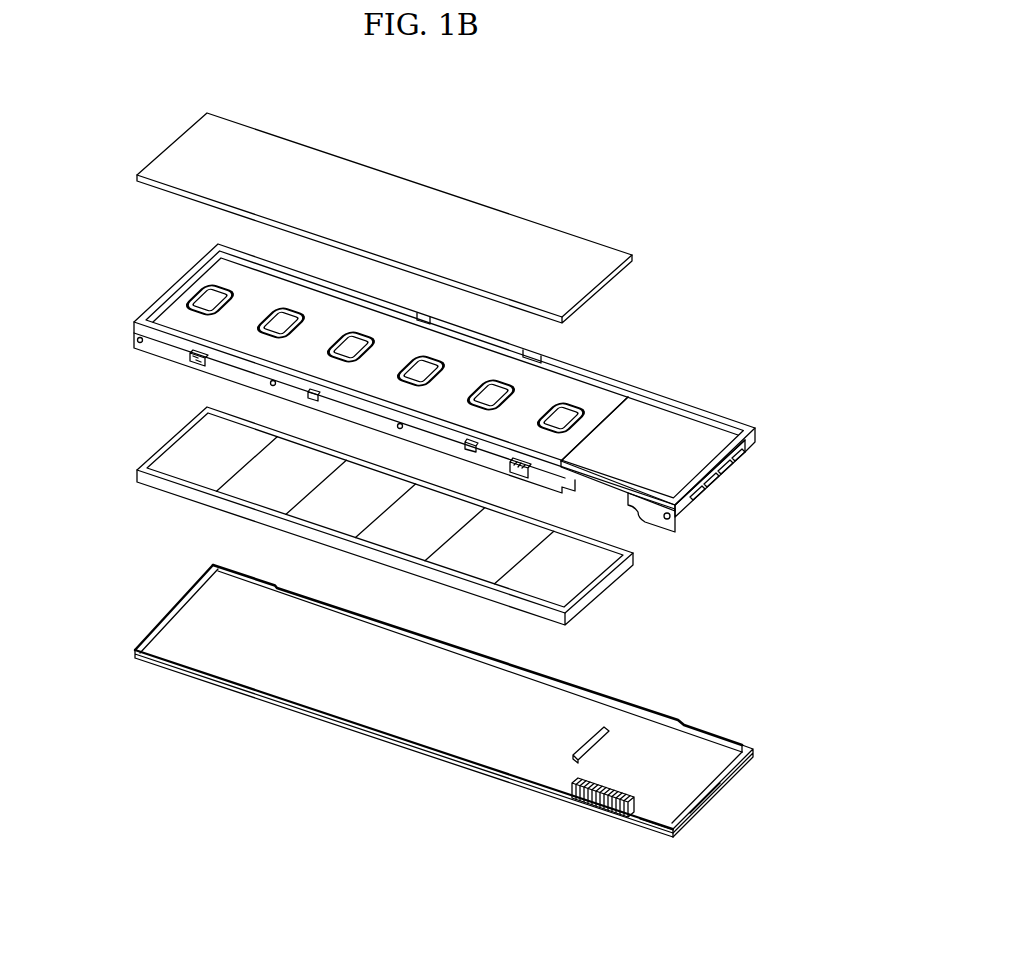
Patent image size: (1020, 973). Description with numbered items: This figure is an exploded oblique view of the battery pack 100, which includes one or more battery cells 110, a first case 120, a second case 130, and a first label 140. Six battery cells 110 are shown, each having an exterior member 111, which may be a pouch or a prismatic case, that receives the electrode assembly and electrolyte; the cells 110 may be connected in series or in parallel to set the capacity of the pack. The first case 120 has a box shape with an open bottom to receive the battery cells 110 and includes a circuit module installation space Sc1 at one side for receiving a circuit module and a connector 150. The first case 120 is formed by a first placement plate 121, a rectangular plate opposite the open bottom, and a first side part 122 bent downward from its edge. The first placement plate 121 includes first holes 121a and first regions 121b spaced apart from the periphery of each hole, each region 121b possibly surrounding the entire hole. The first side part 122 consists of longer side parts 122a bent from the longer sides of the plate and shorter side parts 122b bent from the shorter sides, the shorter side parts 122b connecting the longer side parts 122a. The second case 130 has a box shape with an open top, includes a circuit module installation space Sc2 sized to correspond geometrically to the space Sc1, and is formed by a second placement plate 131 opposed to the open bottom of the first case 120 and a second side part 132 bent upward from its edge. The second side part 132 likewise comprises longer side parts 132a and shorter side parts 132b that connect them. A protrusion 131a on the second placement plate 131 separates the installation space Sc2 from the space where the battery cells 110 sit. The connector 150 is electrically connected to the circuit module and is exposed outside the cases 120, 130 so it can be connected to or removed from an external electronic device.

The battery pack 100 is at (745, 163).
The battery cell 110 is at (246, 490).
The exterior member 111 is at (178, 443).
The first case 120 is at (118, 322).
The first placement plate 121 is at (156, 310).
The first hole 121a is at (203, 300).
The first region 121b is at (212, 288).
The first side part 122 is at (797, 508).
The longer side part 122a is at (440, 440).
The shorter side part 122b is at (716, 492).
The second case 130 is at (118, 643).
The second placement plate 131 is at (322, 683).
The protrusion 131a is at (566, 757).
The second side part 132 is at (740, 883).
The longer side part 132a is at (657, 833).
The shorter side part 132b is at (706, 814).
The first label 140 is at (184, 151).
The connector 150 is at (591, 806).
The circuit module installation space Sc1 is at (655, 435).
The circuit module installation space Sc2 is at (645, 742).